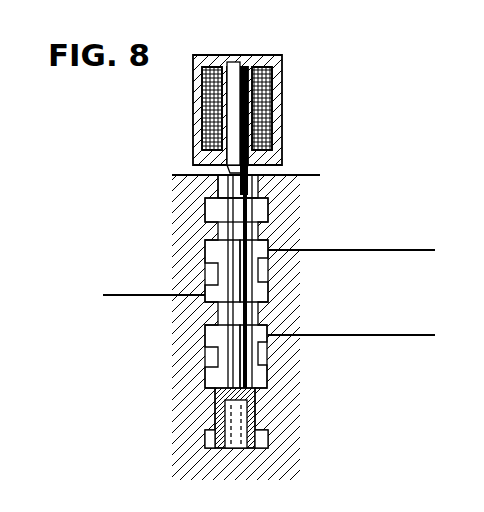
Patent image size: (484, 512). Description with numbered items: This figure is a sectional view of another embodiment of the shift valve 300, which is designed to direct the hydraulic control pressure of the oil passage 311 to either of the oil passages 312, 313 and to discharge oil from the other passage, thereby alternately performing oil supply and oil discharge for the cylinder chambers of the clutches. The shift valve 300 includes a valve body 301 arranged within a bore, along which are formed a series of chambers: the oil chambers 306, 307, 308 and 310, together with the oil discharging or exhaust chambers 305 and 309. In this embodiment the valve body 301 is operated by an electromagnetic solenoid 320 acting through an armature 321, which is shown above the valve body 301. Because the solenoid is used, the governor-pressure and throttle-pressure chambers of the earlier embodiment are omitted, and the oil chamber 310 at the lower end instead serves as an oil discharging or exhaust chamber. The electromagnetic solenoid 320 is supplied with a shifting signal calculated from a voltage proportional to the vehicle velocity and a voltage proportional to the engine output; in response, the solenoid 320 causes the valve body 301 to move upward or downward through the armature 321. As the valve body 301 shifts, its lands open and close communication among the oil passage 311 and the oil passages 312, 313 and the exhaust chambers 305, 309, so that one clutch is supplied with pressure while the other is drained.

The shift valve 300 is at (255, 36).
The valve body 301 is at (260, 189).
The exhaust chamber 305 is at (266, 215).
The oil chamber 306 is at (207, 252).
The oil chamber 307 is at (268, 291).
The oil chamber 308 is at (207, 338).
The exhaust chamber 309 is at (268, 378).
The oil chamber 310 is at (268, 441).
The oil passage 311 is at (140, 296).
The oil passage 312 is at (352, 251).
The oil passage 313 is at (355, 336).
The electromagnetic solenoid 320 is at (282, 101).
The armature 321 is at (245, 137).